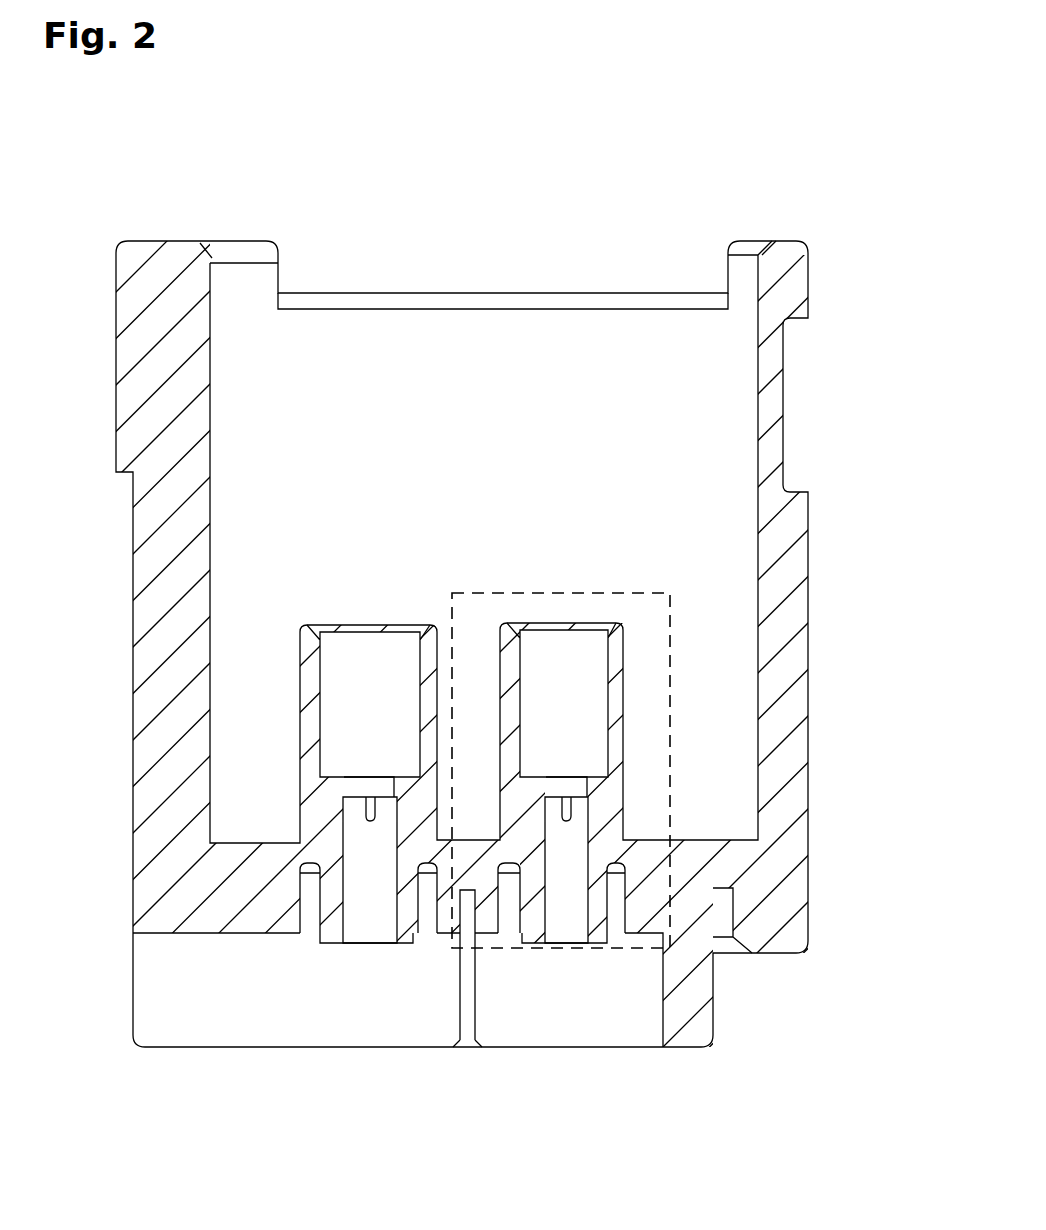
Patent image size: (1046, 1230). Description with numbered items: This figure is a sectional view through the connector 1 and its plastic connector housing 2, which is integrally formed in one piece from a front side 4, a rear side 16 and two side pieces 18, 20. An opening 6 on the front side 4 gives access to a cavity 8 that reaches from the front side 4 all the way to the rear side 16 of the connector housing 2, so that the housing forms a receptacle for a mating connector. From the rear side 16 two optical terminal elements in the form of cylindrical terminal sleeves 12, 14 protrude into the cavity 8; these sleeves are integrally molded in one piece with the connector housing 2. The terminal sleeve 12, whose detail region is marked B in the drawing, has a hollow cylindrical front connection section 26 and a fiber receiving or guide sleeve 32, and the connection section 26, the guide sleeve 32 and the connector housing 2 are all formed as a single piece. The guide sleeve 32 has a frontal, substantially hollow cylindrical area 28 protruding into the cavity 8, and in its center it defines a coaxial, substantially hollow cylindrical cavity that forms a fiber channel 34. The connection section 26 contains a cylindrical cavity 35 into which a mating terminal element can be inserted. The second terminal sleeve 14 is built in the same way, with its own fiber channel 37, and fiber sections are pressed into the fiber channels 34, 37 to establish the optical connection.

The connector 1 is at (600, 146).
The connector housing 2 is at (523, 602).
The front side 4 is at (762, 236).
The opening 6 is at (662, 253).
The cavity 8 is at (545, 460).
The terminal sleeve 12 is at (623, 657).
The terminal sleeve 14 is at (300, 658).
The rear side 16 is at (712, 837).
The side piece 18 is at (808, 548).
The side piece 20 is at (135, 568).
The connection section 26 is at (623, 712).
The hollow cylindrical area 28 is at (623, 795).
The guide sleeve 32 is at (500, 802).
The fiber channel 34 is at (562, 913).
The cavity 35 is at (553, 672).
The fiber channel 37 is at (365, 912).
The detail region B is at (622, 592).